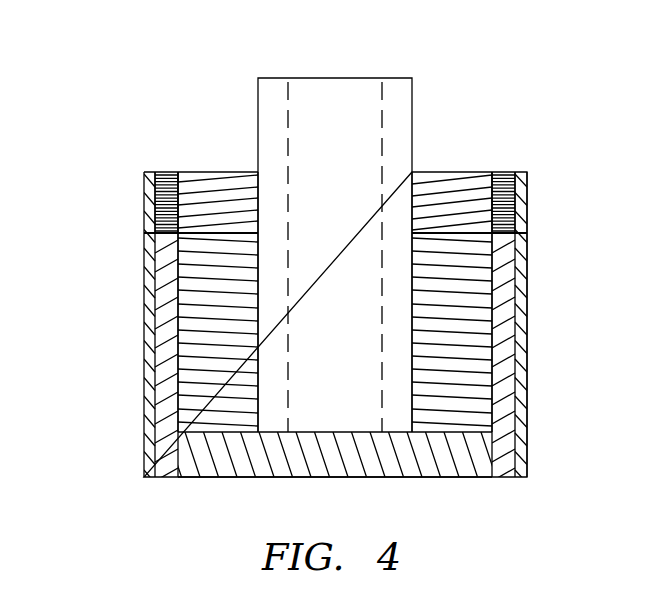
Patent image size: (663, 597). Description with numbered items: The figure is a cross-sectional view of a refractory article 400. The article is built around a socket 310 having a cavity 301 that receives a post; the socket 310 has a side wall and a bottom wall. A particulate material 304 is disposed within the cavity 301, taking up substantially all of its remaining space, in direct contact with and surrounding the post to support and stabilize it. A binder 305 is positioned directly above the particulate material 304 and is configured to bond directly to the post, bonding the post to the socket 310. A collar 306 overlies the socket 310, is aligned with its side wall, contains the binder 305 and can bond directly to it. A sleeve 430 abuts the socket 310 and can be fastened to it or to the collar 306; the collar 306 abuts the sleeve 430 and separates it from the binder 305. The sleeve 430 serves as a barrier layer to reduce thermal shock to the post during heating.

The refractory article 400 is at (116, 34).
The cavity 301 is at (258, 103).
The particulate material 304 is at (207, 405).
The binder 305 is at (220, 172).
The collar 306 is at (155, 203).
The socket 310 is at (155, 353).
The sleeve 430 is at (143, 293).